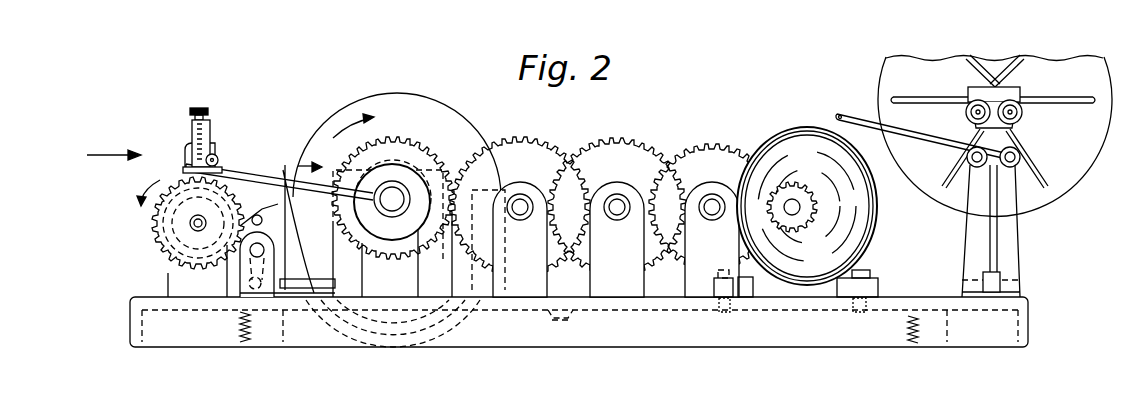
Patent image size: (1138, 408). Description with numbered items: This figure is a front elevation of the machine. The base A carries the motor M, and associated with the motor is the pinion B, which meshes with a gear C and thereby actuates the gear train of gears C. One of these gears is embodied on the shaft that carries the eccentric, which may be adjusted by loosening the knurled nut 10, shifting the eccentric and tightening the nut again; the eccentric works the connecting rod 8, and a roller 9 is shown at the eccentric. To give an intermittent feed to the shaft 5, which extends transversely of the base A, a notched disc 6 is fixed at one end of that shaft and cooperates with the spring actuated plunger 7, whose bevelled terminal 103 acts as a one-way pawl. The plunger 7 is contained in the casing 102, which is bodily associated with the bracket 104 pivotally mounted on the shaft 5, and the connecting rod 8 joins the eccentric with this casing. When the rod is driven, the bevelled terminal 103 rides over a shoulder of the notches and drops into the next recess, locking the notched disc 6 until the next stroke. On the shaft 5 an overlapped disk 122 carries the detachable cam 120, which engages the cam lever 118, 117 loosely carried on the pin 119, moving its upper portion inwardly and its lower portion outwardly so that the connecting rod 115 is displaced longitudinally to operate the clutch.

The base A is at (847, 343).
The pinion B is at (792, 185).
The gear C is at (407, 158).
The motor M is at (821, 138).
The shaft 5 is at (190, 229).
The notched disc 6 is at (150, 213).
The spring actuated plunger 7 is at (205, 108).
The connecting rod 8 is at (261, 170).
The roller 9 is at (382, 239).
The knurled nut 10 is at (432, 163).
The casing 102 is at (216, 155).
The bevelled terminal 103 is at (183, 169).
The bracket 104 is at (186, 158).
The connecting rod 115 is at (299, 298).
The cam lever 117 is at (258, 297).
The cam lever 118 is at (295, 238).
The pin 119 is at (222, 298).
The cam 120 is at (251, 211).
The overlapped disk 122 is at (170, 262).